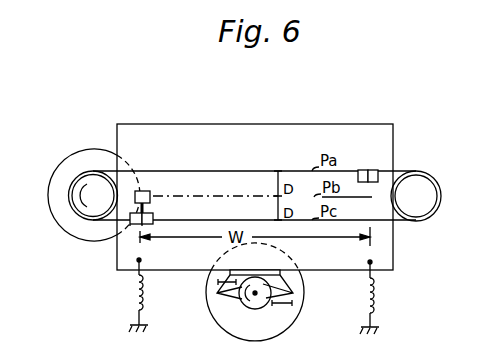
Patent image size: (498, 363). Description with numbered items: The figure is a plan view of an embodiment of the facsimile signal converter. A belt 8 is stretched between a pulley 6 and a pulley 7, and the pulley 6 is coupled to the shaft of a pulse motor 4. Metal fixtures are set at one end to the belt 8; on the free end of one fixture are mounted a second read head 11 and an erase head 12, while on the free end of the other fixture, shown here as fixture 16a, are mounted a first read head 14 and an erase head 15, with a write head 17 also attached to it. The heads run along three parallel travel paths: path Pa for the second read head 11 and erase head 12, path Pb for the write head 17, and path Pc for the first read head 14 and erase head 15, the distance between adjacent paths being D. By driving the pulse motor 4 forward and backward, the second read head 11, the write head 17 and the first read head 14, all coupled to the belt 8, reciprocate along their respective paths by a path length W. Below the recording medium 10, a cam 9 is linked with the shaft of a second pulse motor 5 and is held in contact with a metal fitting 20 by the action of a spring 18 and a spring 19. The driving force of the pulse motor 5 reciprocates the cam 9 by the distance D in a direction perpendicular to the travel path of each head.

The pulse motor 4 is at (57, 164).
The pulse motor 5 is at (291, 328).
The pulley 6 is at (97, 183).
The pulley 7 is at (433, 191).
The belt 8 is at (225, 171).
The cam 9 is at (236, 317).
The recording medium 10 is at (316, 124).
The second read head 11 is at (375, 170).
The erase head 12 is at (362, 170).
The first read head 14 is at (143, 226).
The erase head 15 is at (137, 226).
The sensor 16a is at (165, 211).
The write head 17 is at (145, 191).
The spring 18 is at (146, 304).
The spring 19 is at (376, 301).
The metal fitting 20 is at (283, 275).